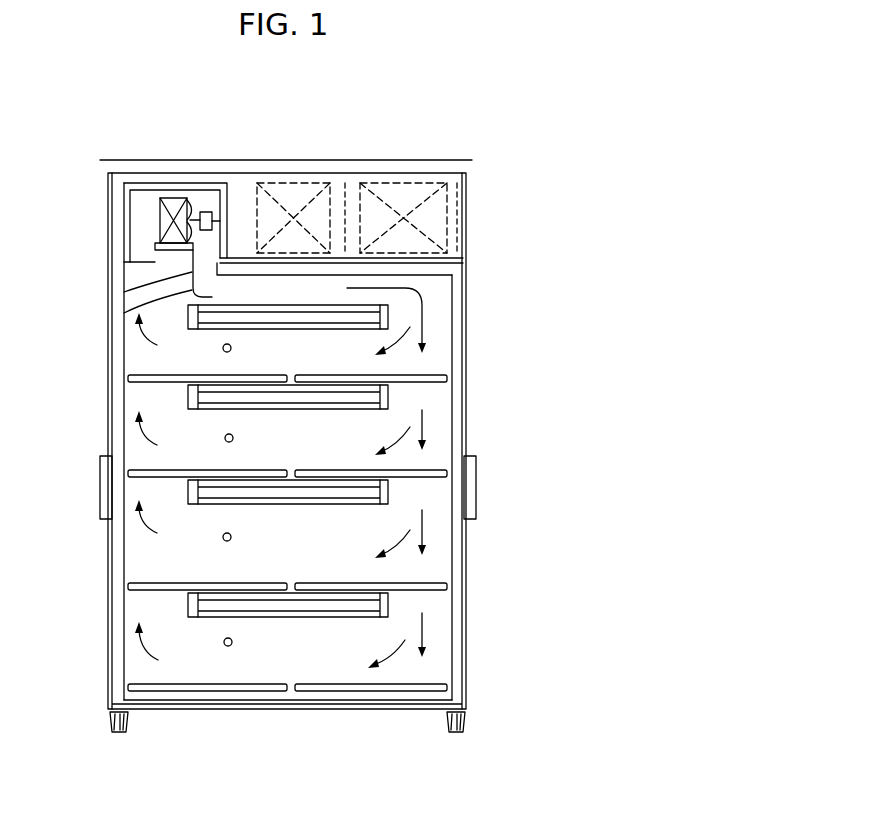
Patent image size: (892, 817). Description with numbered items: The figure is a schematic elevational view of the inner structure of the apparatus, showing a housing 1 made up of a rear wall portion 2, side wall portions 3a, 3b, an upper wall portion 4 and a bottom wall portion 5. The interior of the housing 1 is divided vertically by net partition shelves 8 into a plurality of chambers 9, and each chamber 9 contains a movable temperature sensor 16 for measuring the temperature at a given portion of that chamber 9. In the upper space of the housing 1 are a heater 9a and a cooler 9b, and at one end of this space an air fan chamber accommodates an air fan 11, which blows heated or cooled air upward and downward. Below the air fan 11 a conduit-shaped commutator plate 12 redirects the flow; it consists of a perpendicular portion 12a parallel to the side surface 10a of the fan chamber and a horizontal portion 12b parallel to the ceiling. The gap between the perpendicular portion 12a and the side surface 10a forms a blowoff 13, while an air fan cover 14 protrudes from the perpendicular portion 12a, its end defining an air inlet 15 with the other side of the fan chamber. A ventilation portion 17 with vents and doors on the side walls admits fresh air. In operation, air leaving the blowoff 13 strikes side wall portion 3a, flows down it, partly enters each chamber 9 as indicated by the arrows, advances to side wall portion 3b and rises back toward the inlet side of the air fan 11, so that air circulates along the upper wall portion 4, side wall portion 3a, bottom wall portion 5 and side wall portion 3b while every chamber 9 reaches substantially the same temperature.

The housing 1 is at (457, 296).
The rear wall portion 2 is at (370, 120).
The side wall portion 3a is at (466, 375).
The side wall portion 3b is at (106, 420).
The upper wall portion 4 is at (410, 268).
The bottom wall portion 5 is at (290, 710).
The net partition shelves 8 is at (437, 470).
The chamber 9 is at (299, 662).
The heater 9a is at (301, 186).
The cooler 9b is at (416, 186).
The side surface of the air fan chamber 10a is at (223, 212).
The air fan 11 is at (163, 187).
The commutator plate 12 is at (212, 297).
The perpendicular portion 12a is at (130, 290).
The horizontal portion 12b is at (125, 313).
The blowoff 13 is at (228, 250).
The air fan cover 14 is at (137, 258).
The air inlet 15 is at (143, 233).
The temperature sensor 16 is at (224, 645).
The ventilation portion 17 is at (478, 497).